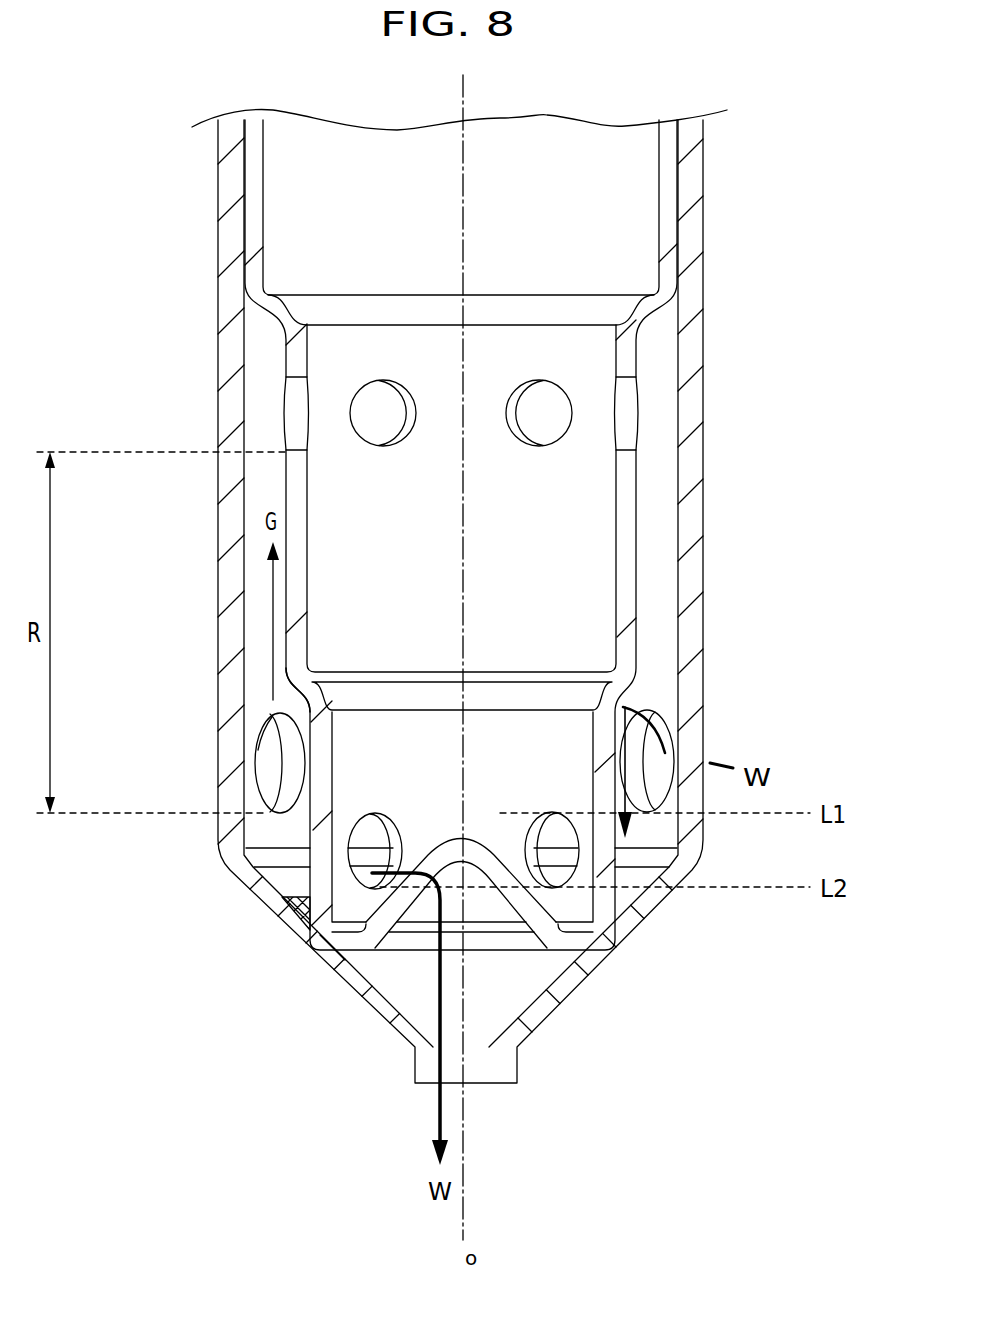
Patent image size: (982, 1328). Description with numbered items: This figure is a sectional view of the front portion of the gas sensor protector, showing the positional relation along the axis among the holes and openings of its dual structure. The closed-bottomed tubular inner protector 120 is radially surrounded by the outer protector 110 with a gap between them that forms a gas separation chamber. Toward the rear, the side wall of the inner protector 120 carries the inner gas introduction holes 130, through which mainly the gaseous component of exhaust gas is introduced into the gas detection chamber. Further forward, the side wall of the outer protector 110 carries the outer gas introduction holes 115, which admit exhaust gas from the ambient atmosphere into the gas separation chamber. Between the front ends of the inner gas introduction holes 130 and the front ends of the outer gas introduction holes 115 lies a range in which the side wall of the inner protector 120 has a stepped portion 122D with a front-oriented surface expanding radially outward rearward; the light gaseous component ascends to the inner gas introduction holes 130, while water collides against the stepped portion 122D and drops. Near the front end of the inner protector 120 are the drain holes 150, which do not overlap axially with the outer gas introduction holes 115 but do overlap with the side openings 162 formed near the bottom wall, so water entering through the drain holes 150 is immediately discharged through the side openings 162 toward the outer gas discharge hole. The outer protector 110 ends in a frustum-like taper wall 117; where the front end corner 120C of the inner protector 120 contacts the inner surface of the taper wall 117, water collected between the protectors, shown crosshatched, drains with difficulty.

The outer protector 110 is at (695, 562).
The inner protector 120 is at (625, 480).
The inner gas introduction holes 130 is at (367, 411).
The stepped portion 122D is at (308, 690).
The outer gas introduction holes 115 is at (268, 772).
The drain holes 150 is at (360, 827).
The taper wall 117 is at (292, 903).
The front end corner 120C is at (323, 957).
The side openings 162 is at (485, 905).